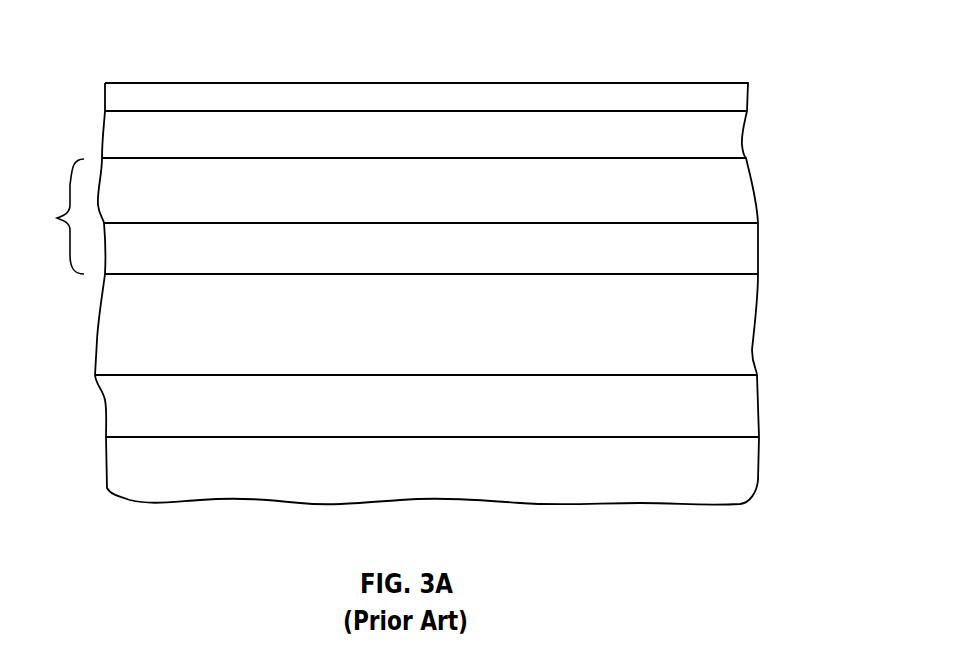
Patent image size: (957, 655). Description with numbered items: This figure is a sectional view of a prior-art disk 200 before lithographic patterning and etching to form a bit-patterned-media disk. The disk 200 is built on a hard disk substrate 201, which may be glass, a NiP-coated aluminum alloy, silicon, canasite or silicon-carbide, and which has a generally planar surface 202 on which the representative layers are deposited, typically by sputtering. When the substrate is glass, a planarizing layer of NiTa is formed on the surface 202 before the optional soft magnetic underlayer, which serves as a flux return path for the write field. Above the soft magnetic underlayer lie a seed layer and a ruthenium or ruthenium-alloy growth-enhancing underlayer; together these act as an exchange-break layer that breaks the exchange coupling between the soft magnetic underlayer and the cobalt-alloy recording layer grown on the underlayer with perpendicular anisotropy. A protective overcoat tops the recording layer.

The disk 200 is at (119, 47).
The substrate 201 is at (747, 465).
The substrate surface 202 is at (737, 436).